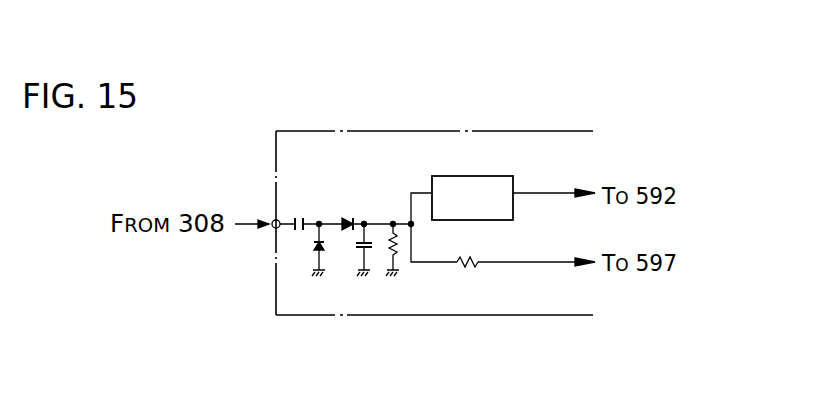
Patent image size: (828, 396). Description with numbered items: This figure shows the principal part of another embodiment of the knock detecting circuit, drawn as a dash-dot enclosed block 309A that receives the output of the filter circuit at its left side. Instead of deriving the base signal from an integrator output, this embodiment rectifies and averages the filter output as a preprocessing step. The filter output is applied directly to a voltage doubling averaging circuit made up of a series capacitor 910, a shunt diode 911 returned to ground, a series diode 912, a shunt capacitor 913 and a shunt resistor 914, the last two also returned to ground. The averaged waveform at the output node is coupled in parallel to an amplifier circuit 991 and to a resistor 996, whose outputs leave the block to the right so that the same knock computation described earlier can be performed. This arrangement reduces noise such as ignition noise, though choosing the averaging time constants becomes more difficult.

The receiver circuit block 309A is at (478, 131).
The capacitor 910 is at (312, 205).
The diode 911 is at (313, 247).
The diode 912 is at (348, 218).
The capacitor 913 is at (358, 246).
The resistor 914 is at (396, 258).
The amplifier circuit 991 is at (495, 176).
The resistor 996 is at (470, 258).